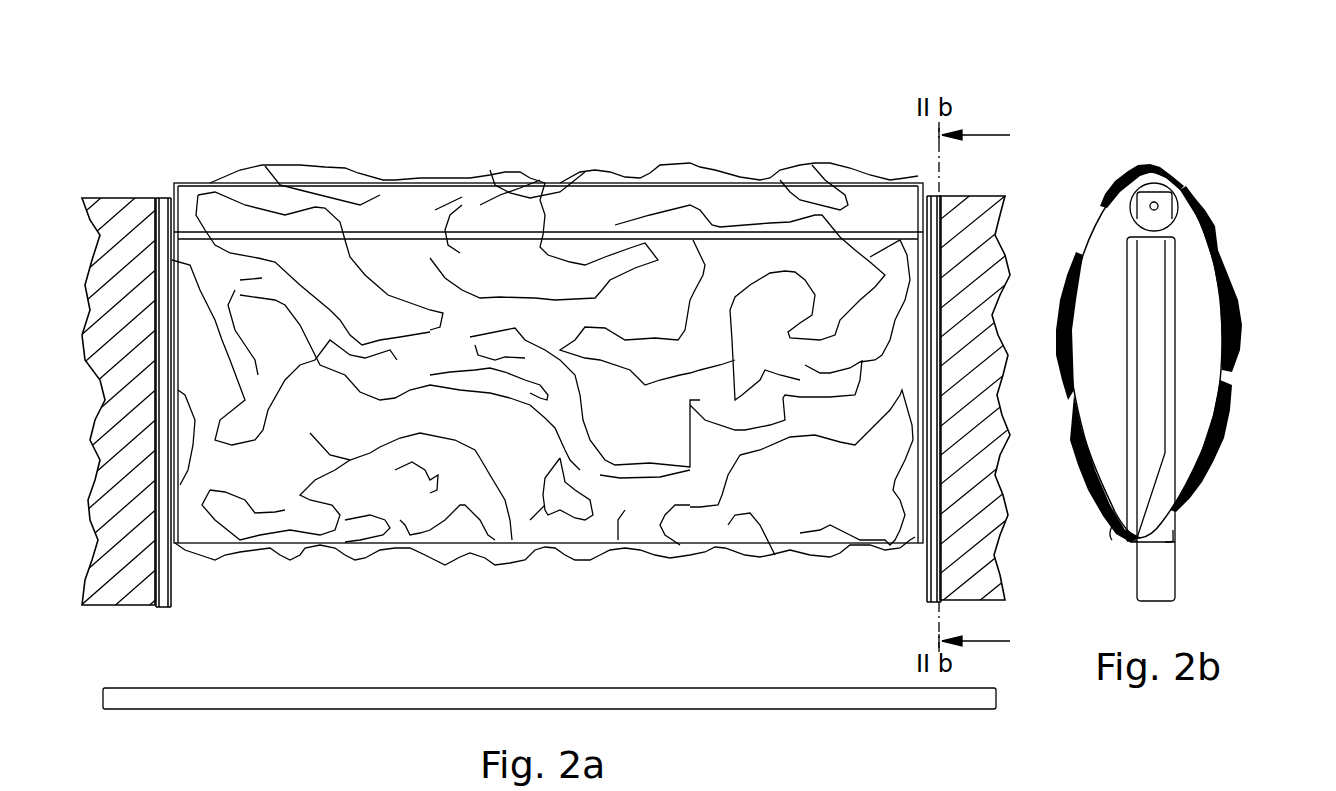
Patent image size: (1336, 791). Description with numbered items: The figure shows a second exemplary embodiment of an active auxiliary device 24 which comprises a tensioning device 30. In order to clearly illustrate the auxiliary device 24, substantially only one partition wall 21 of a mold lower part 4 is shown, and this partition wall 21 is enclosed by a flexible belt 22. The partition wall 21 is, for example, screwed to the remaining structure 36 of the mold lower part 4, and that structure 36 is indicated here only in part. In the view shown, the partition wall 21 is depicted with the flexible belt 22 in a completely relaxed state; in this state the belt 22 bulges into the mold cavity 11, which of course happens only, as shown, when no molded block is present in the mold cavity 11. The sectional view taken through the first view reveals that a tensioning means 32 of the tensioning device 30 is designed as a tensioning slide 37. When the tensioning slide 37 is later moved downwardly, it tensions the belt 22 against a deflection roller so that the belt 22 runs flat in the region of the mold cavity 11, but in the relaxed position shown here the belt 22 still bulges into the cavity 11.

In FIG. 2a, the mold lower part 4 is at (982, 106).
In FIG. 2b, the mold lower part 4 is at (1222, 166).
In FIG. 2b, the mold cavity 11 is at (1064, 477).
In FIG. 2a, the partition wall 21 is at (828, 96).
In FIG. 2b, the partition wall 21 is at (1187, 136).
In FIG. 2a, the flexible belt 22 is at (614, 545).
In FIG. 2b, the flexible belt 22 is at (1221, 297).
In FIG. 2b, the active auxiliary device 24 is at (1223, 418).
In FIG. 2b, the tensioning device 30 is at (1174, 307).
In FIG. 2b, the tensioning means 32 is at (1100, 546).
In FIG. 2a, the remaining structure 36 is at (125, 228).
In FIG. 2b, the tensioning slide 37 is at (1128, 493).